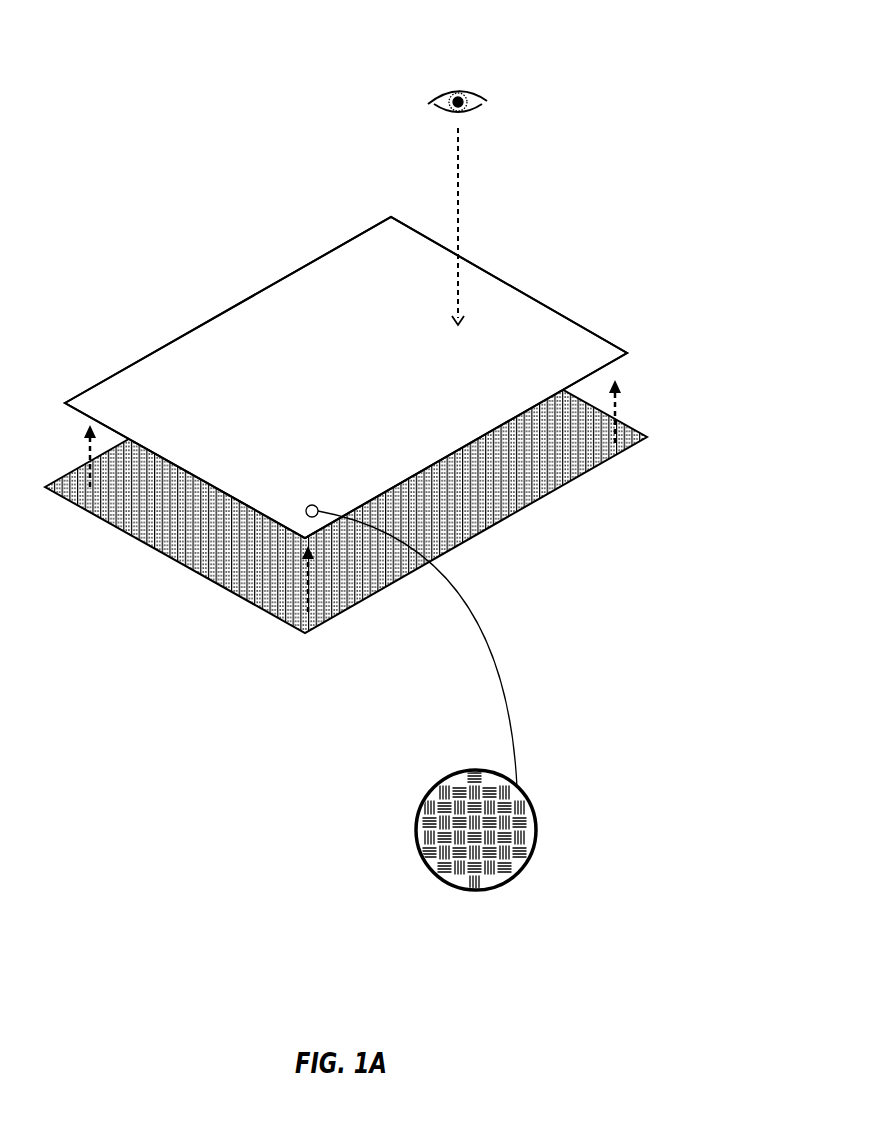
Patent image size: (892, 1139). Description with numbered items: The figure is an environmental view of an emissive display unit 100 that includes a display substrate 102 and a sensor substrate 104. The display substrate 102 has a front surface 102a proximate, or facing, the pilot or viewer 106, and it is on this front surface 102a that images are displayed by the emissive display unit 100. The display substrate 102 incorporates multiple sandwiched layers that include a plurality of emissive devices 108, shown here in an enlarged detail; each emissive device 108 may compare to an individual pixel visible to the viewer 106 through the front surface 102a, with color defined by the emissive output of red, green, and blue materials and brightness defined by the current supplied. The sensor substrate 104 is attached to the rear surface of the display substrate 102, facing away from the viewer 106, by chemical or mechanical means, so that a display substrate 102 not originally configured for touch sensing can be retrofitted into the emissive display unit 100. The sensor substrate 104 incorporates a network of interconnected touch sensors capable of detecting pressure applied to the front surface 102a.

The emissive display unit 100 is at (58, 53).
The display substrate 102 is at (103, 380).
The front surface 102a is at (240, 353).
The sensor substrate 104 is at (108, 517).
The viewer 106 is at (458, 89).
The emissive devices 108 is at (452, 783).